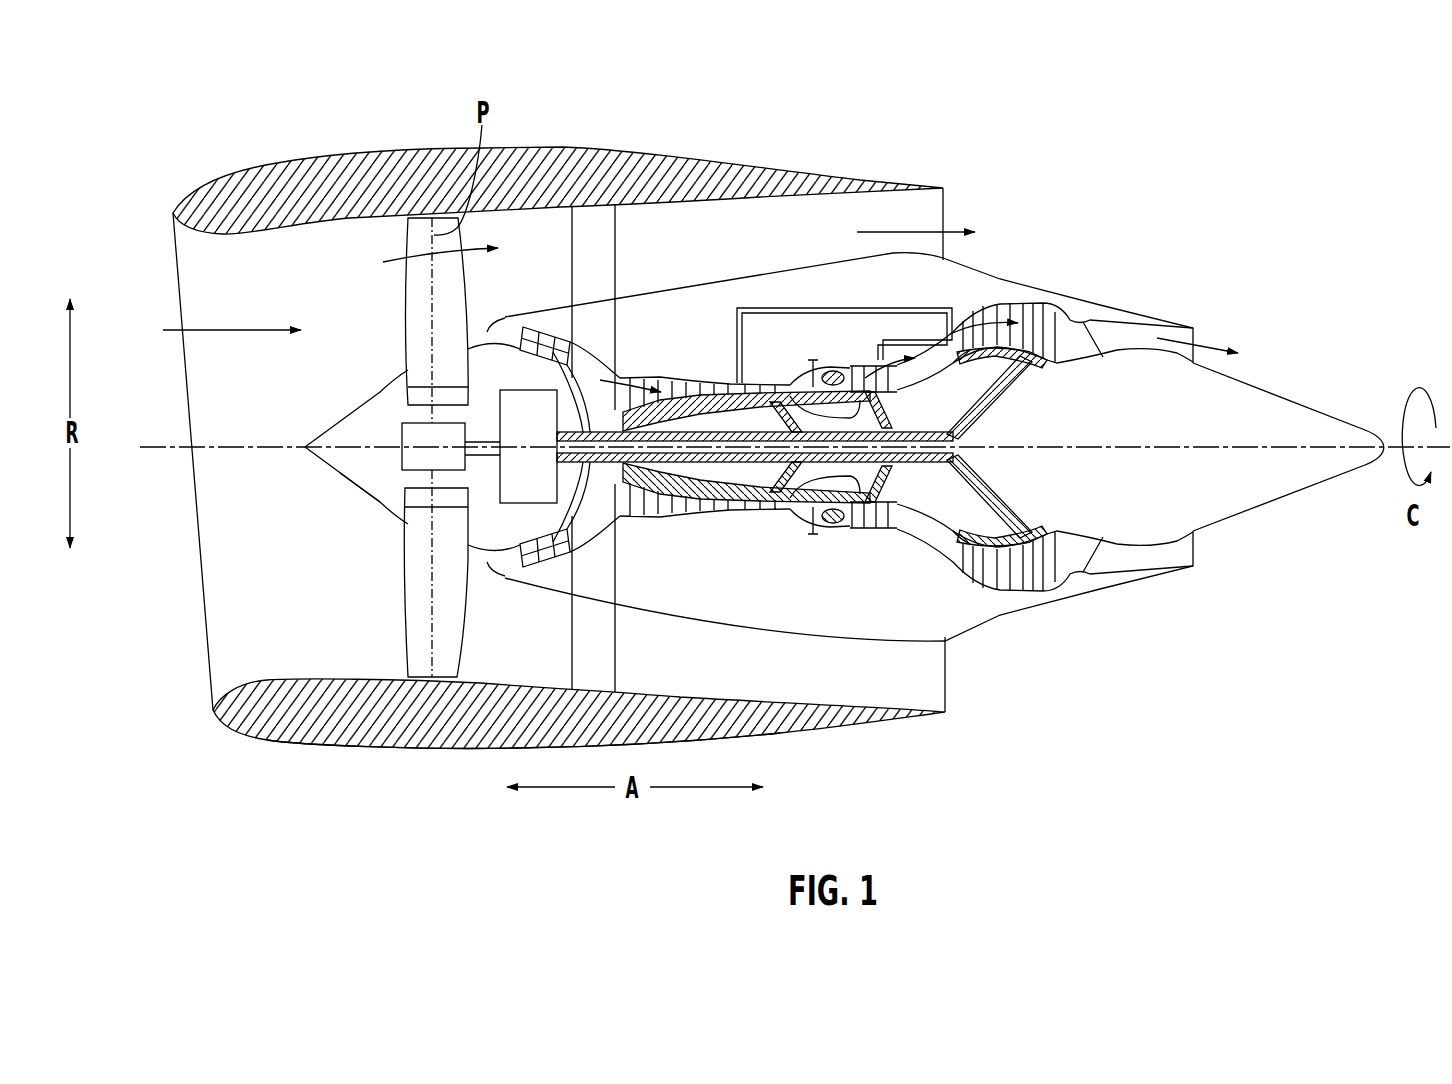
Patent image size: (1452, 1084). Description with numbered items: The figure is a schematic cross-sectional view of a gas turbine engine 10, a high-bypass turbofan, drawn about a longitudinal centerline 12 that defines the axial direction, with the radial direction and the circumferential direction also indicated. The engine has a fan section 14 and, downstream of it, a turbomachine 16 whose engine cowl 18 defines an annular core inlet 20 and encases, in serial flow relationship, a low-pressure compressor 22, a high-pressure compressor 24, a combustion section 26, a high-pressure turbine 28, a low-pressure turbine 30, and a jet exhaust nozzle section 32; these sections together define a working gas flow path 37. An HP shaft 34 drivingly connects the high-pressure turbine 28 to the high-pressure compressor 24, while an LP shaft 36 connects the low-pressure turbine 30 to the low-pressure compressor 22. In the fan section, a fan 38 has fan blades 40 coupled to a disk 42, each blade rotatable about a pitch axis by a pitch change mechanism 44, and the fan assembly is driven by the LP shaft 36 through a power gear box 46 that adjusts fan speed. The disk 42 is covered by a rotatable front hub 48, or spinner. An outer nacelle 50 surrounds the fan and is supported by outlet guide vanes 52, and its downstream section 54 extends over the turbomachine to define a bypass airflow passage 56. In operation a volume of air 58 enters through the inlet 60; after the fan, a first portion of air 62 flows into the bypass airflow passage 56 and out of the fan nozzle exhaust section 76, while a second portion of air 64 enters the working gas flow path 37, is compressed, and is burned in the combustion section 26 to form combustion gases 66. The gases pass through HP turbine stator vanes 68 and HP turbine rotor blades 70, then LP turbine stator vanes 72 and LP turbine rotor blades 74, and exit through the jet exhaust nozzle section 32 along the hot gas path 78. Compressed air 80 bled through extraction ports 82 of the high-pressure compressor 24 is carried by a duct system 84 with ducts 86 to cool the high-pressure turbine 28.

The gas turbine engine 10 is at (1107, 156).
The longitudinal centerline 12 is at (1140, 447).
The fan section 14 is at (365, 231).
The turbomachine 16 is at (746, 296).
The engine cowl 18 is at (770, 628).
The annular core inlet 20 is at (515, 563).
The low-pressure compressor 22 is at (571, 535).
The high-pressure compressor 24 is at (648, 512).
The combustion section 26 is at (830, 520).
The high-pressure turbine 28 is at (900, 520).
The low-pressure turbine 30 is at (1028, 592).
The jet exhaust nozzle section 32 is at (1108, 572).
The high-pressure shaft 34 is at (857, 407).
The low-pressure shaft 36 is at (957, 427).
The working gas flow path 37 is at (604, 516).
The fan 38 is at (362, 498).
The fan blades 40 is at (403, 593).
The disk 42 is at (430, 396).
The pitch change mechanism 44 is at (400, 433).
The power gear box 46 is at (540, 407).
The front hub 48 is at (303, 455).
The outer nacelle 50 is at (437, 748).
The outlet guide vanes 52 is at (615, 262).
The downstream section of the nacelle 54 is at (890, 178).
The bypass airflow passage 56 is at (798, 237).
The volume of air 58 is at (228, 330).
The inlet 60 is at (210, 683).
The first portion of air 62 is at (417, 268).
The second portion of air 64 is at (485, 330).
The combustion gases 66 is at (990, 320).
The HP turbine stator vanes 68 is at (860, 520).
The HP turbine rotor blades 70 is at (897, 497).
The LP turbine stator vanes 72 is at (950, 562).
The LP turbine rotor blades 74 is at (966, 568).
The fan nozzle exhaust section 76 is at (950, 208).
The hot gas path 78 is at (933, 336).
The compressed air 80 is at (737, 387).
The extraction ports 82 is at (755, 379).
The duct system 84 is at (832, 296).
The ducts 86 is at (763, 310).